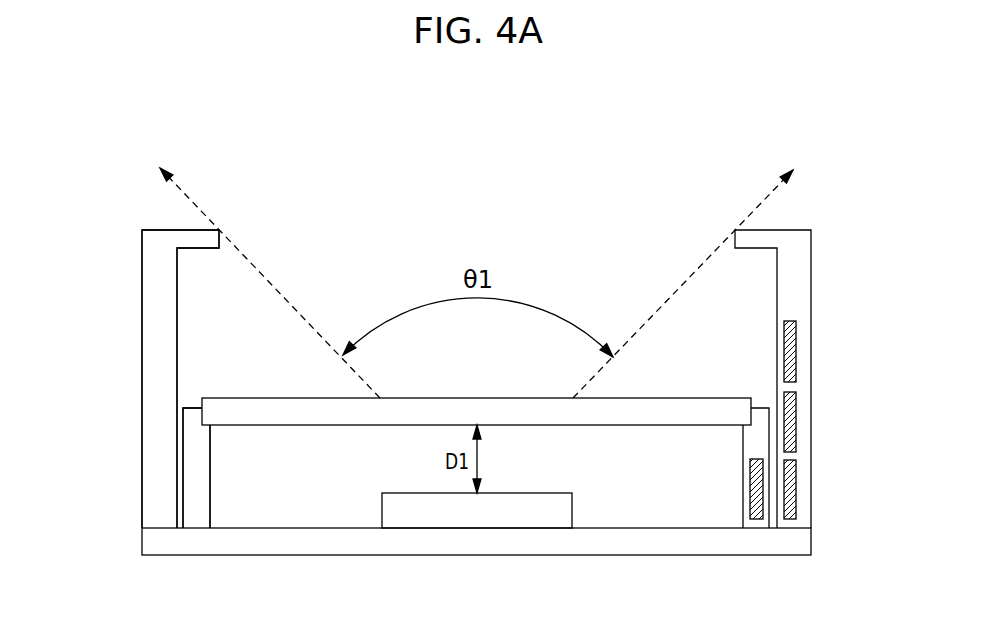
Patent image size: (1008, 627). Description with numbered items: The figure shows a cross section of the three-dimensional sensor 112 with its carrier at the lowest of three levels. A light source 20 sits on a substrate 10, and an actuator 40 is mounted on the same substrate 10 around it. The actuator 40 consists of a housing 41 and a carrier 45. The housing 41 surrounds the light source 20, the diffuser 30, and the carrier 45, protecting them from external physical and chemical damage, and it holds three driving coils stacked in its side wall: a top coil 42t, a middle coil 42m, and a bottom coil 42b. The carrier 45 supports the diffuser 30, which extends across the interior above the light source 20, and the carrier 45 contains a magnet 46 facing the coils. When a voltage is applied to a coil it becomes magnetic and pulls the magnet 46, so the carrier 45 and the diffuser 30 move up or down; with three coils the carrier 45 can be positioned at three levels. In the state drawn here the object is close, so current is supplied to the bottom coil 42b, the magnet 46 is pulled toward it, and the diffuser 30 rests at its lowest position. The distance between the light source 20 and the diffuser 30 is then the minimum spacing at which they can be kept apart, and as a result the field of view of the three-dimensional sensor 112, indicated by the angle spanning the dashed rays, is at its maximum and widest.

The 3D sensor 112 is at (462, 148).
The substrate 10 is at (800, 543).
The light source 20 is at (475, 515).
The diffuser 30 is at (293, 408).
The actuator 40 is at (96, 378).
The housing 41 is at (150, 378).
The carrier 45 is at (197, 456).
The magnet 46 is at (750, 495).
The top coil 42t is at (797, 350).
The middle coil 42m is at (797, 420).
The bottom coil 42b is at (797, 493).